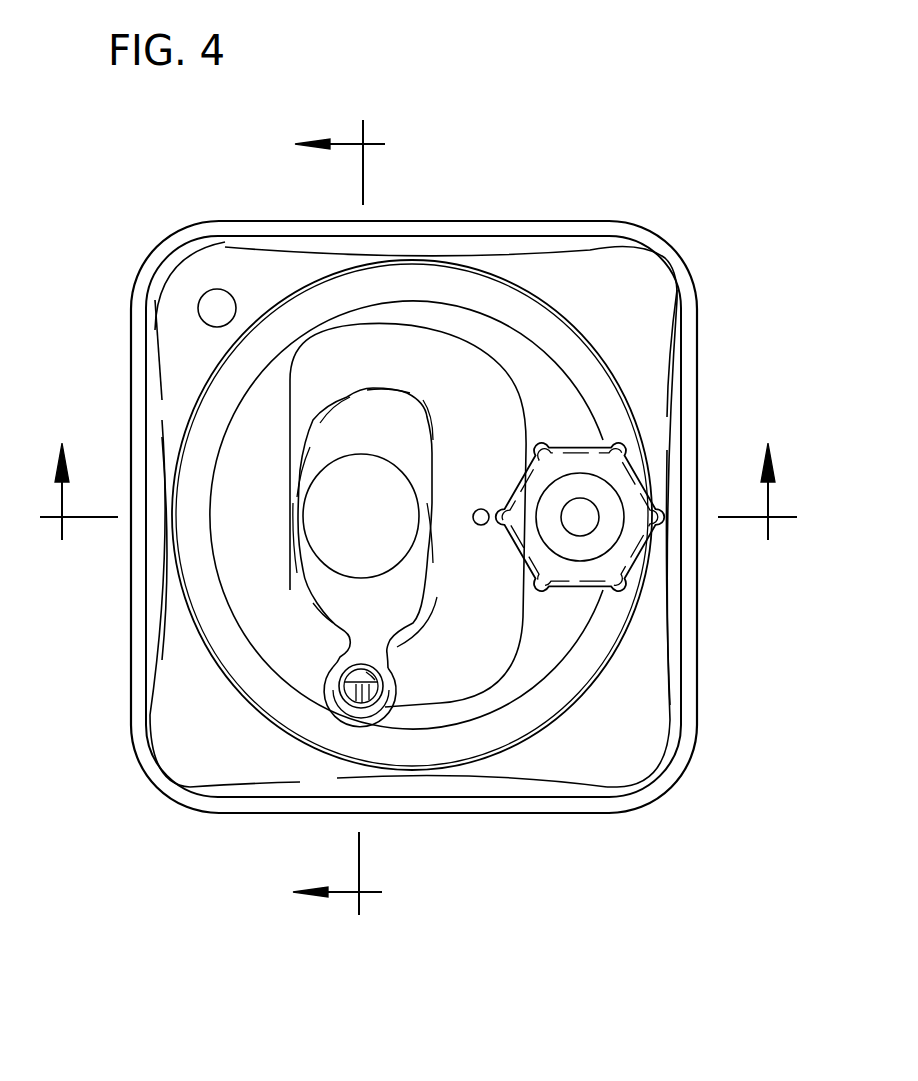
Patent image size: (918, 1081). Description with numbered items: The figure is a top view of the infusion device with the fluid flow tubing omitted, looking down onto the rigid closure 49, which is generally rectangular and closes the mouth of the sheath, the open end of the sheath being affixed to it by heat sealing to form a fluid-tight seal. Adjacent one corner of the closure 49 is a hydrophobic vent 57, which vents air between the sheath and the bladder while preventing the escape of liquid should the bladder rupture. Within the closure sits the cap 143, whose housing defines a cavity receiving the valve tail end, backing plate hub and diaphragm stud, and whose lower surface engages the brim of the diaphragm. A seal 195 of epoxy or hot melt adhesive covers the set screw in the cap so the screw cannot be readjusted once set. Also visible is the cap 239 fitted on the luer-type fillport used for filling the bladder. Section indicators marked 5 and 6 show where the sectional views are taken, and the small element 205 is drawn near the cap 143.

The section line 5- 5 is at (347, 514).
The section line 6- 6 is at (416, 499).
The rigid closure 49 is at (588, 222).
The hydrophobic vent 57 is at (207, 310).
The cap 143 is at (525, 367).
The seal 195 is at (333, 542).
The pin 205 is at (474, 508).
The cap 239 is at (598, 590).